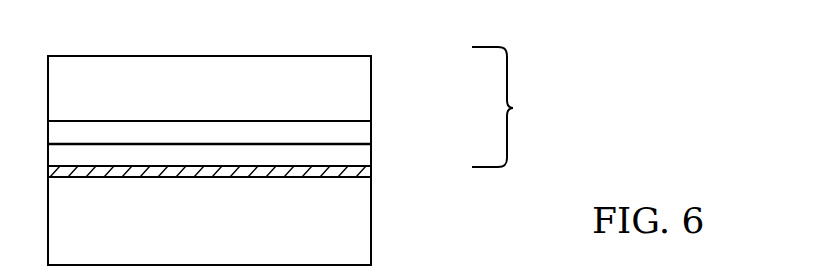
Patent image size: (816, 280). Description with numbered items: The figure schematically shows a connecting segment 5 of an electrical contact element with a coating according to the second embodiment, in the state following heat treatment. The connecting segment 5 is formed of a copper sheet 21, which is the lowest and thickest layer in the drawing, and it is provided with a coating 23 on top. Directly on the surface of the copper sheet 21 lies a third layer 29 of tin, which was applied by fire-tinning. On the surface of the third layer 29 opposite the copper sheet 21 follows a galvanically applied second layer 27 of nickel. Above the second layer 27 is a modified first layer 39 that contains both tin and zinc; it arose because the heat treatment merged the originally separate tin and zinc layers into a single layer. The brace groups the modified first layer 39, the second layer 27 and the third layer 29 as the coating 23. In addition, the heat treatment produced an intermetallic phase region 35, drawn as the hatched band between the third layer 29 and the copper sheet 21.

The connecting segment 5 is at (498, 190).
The copper sheet 21 is at (362, 217).
The coating 23 is at (512, 107).
The second layer 27 is at (370, 112).
The third layer 29 is at (358, 153).
The intermetallic phase region 35 is at (365, 172).
The modified first layer 39 is at (353, 82).